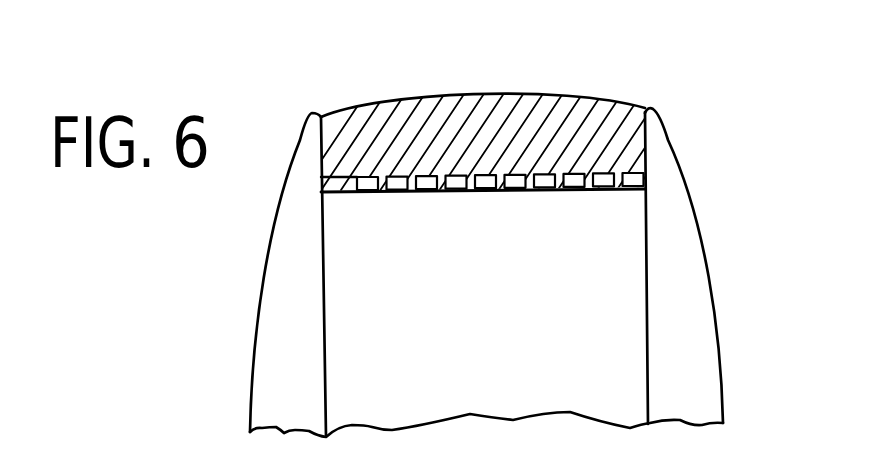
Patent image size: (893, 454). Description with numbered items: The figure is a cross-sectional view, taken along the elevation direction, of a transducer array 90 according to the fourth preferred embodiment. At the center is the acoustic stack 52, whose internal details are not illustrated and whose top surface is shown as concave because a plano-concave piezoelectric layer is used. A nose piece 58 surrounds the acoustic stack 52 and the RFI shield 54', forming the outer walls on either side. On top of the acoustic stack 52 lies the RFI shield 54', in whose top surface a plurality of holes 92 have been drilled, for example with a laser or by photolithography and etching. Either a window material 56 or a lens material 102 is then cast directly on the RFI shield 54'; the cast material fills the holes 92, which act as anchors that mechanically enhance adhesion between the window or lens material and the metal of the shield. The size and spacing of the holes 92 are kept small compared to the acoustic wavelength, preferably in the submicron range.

The transducer array 90 is at (228, 309).
The acoustic stack 52 is at (372, 270).
The nose piece 58 is at (672, 185).
The low loss acoustic window 56 is at (412, 120).
The lens material 102 is at (483, 142).
The RFI shield 54' is at (522, 137).
The holes 92 is at (639, 190).